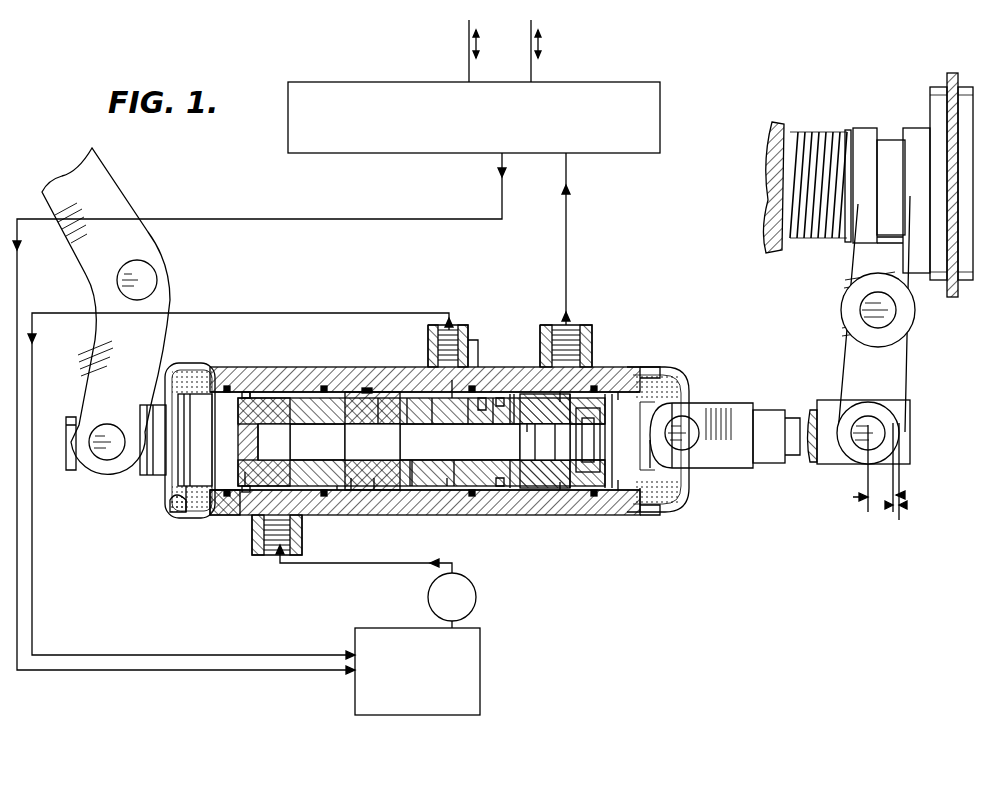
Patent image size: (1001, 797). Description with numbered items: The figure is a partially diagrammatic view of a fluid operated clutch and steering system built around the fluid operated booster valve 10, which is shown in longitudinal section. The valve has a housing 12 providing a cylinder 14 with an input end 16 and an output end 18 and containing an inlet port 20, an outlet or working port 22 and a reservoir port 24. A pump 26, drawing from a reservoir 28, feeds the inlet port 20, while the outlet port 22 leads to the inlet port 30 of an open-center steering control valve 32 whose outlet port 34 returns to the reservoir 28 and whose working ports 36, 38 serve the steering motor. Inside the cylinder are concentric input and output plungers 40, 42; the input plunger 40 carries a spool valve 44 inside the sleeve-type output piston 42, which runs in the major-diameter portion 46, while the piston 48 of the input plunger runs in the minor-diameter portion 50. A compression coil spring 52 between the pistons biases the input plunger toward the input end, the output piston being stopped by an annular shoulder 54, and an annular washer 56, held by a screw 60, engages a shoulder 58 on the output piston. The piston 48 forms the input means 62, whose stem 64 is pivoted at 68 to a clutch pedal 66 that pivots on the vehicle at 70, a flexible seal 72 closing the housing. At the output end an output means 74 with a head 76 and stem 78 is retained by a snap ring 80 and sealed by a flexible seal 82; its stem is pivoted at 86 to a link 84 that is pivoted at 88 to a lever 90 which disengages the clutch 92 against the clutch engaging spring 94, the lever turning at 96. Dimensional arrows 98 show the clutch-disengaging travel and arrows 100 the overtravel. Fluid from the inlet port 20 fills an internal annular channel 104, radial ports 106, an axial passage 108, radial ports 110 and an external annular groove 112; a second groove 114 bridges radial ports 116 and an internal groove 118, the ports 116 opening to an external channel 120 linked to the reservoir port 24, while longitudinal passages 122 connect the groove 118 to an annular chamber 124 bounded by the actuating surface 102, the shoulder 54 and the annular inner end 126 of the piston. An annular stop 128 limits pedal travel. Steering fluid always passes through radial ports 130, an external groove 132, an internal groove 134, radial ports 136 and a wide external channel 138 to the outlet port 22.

The fluid operated booster valve 10 is at (604, 363).
The housing 12 is at (332, 360).
The cylinder 14 is at (389, 388).
The input end 16 is at (217, 367).
The output end 18 is at (658, 364).
The inlet port 20 is at (250, 537).
The outlet or working port 22 is at (593, 333).
The reservoir port 24 is at (480, 334).
The pump 26 is at (477, 599).
The reservoir 28 is at (481, 661).
The inlet port of control valve 30 is at (569, 158).
The control valve 32 is at (617, 82).
The outlet port of control valve 34 is at (499, 157).
The working port 36 is at (469, 82).
The working port 38 is at (531, 82).
The input plunger 40 is at (515, 492).
The output plunger or piston 42 is at (613, 508).
The spool valve 44 is at (548, 482).
The major-diameter portion 46 is at (404, 365).
The piston 48 is at (283, 397).
The minor-diameter portion 50 is at (302, 397).
The compression coil spring 52 is at (368, 388).
The annular shoulder 54 is at (366, 390).
The annular washer 56 is at (568, 490).
The annular shoulder 58 is at (555, 490).
The screw 60 is at (596, 437).
The movable input means 62 is at (152, 478).
The stem 64 is at (80, 472).
The clutch pedal 66 is at (112, 191).
The pivotal connection 68 is at (108, 452).
The pivotal connection 70 is at (150, 278).
The flexible seal 72 is at (168, 504).
The output means 74 is at (657, 409).
The head 76 is at (686, 445).
The stem 78 is at (690, 468).
The snap ring 80 is at (617, 508).
The flexible seal 82 is at (684, 507).
The link 84 is at (772, 413).
The pivotal connection 86 is at (686, 428).
The pivot point 88 is at (866, 447).
The lever 90 is at (900, 373).
The clutch 92 is at (920, 92).
The clutch engaging spring 94 is at (820, 137).
The pivot mounting 96 is at (892, 313).
The dimensional arrows 98 is at (853, 497).
The dimensional arrows 100 is at (885, 505).
The actuating surface 102 is at (351, 486).
The internal annular channel 104 is at (230, 514).
The radial ports 106 is at (250, 393).
The axial passage 108 is at (303, 447).
The radial ports 110 is at (407, 398).
The external annular groove 112 is at (410, 460).
The external annular groove 114 is at (468, 405).
The radial ports 116 is at (432, 405).
The internal annular groove 118 is at (447, 486).
The external channel 120 is at (452, 380).
The longitudinal passages 122 is at (378, 405).
The annular chamber 124 is at (374, 488).
The annular inner end 126 is at (337, 490).
The annular stop 128 is at (187, 517).
The radial ports 130 is at (527, 428).
The external annular groove 132 is at (514, 402).
The internal annular groove 134 is at (493, 420).
The radial ports 136 is at (500, 400).
The external annular channel 138 is at (482, 405).